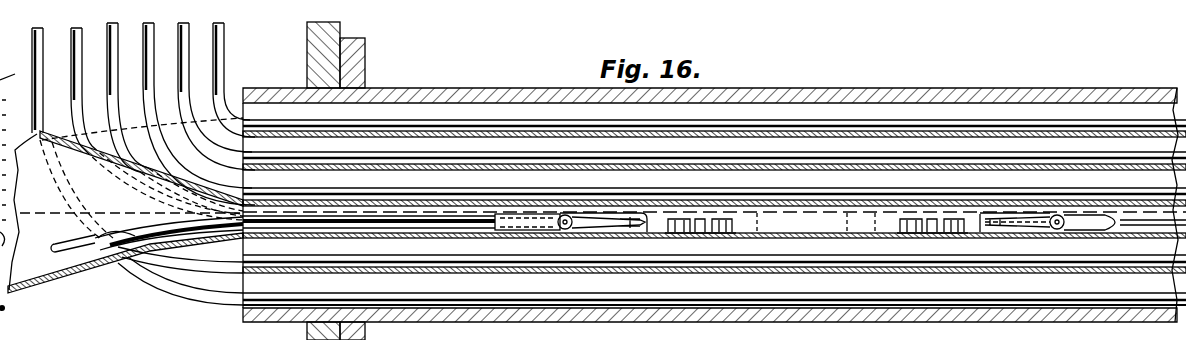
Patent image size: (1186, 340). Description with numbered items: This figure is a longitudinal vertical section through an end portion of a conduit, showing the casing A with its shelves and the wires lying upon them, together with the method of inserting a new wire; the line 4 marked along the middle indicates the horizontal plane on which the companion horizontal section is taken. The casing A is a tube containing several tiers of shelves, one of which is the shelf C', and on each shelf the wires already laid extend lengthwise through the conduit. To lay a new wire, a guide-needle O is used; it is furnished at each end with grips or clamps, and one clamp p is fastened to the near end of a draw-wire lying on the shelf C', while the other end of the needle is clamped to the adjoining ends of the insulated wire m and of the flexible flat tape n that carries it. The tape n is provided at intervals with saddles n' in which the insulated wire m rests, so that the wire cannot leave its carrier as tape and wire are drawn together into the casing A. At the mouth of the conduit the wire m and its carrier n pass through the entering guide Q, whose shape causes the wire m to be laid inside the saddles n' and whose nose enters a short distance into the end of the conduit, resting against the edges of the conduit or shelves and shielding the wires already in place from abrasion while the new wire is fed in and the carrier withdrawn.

The casing A is at (438, 90).
The shelf C' is at (609, 164).
The grip or clamp p is at (548, 236).
The guide-needle O is at (714, 222).
The wire and carrier entering guide Q is at (84, 278).
The insulated wire m is at (48, 236).
The flexible flat tape n is at (125, 263).
The saddles n' is at (169, 261).
The reference line 4 is at (131, 215).